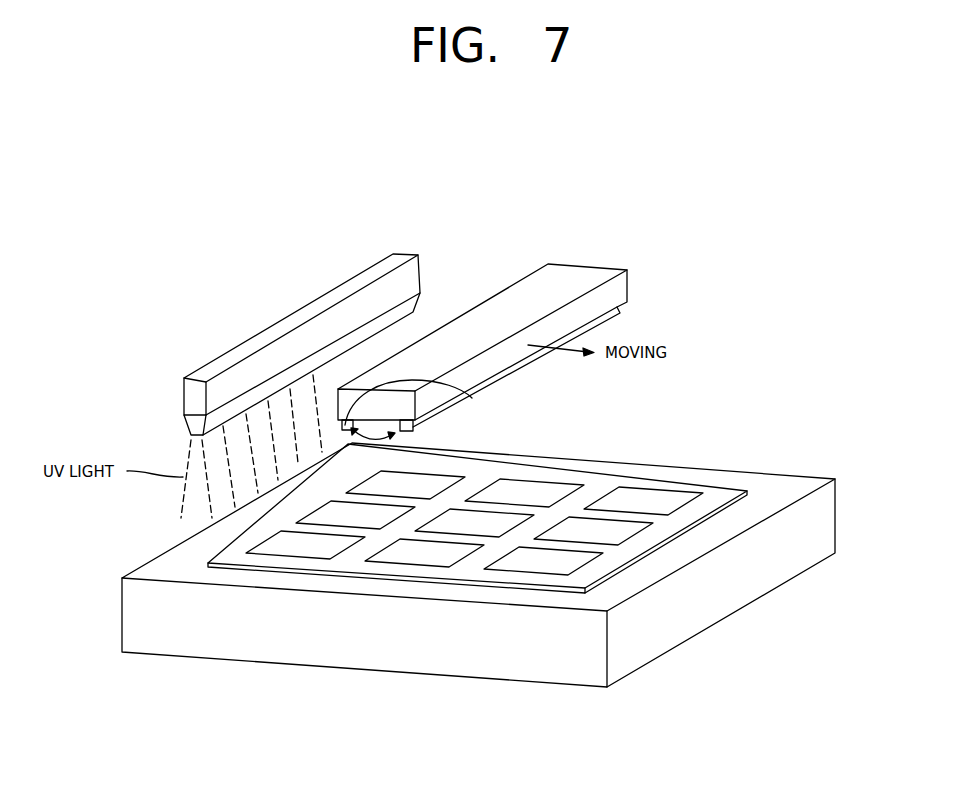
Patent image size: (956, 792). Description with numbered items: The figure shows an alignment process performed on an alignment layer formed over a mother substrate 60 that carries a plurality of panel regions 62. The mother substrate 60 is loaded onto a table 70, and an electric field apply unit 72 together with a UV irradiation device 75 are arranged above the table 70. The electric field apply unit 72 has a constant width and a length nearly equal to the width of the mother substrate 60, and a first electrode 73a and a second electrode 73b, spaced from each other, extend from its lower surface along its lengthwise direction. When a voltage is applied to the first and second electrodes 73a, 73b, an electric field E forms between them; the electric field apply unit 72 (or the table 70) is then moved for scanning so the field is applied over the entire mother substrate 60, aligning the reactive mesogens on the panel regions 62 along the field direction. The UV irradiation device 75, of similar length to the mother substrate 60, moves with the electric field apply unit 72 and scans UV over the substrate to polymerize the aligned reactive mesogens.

The UV irradiation device 75 is at (285, 322).
The electric field apply unit 72 is at (578, 275).
The first electrode 73a is at (412, 380).
The second electrode 73b is at (445, 409).
The electric field E is at (395, 436).
The table 70 is at (735, 593).
The mother substrate 60 is at (712, 498).
The panel regions 62 is at (658, 497).